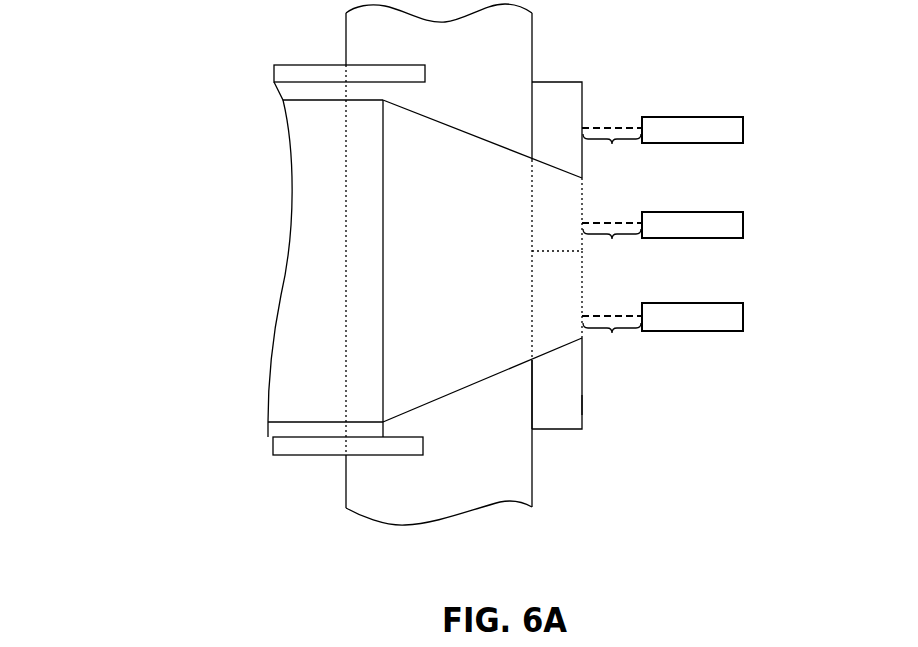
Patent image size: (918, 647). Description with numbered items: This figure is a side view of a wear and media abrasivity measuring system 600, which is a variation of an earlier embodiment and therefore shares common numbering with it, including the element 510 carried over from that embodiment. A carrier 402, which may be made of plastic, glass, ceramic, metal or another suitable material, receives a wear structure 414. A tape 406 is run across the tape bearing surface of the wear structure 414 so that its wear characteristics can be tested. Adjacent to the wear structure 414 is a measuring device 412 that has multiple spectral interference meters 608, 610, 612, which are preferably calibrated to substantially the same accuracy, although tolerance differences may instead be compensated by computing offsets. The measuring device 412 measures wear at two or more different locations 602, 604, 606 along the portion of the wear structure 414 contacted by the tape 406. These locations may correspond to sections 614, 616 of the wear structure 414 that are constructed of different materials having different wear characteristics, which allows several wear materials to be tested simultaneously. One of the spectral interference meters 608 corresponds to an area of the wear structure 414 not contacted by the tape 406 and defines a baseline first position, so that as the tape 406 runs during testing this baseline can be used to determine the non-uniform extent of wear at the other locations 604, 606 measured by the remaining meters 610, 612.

The system 600 is at (108, 118).
The carrier 402 is at (500, 505).
The tape 406 is at (398, 420).
The measuring device 412 is at (720, 362).
The wear structure 414 is at (588, 398).
The probe housing 510 is at (281, 293).
The location 602 is at (596, 118).
The location 604 is at (596, 213).
The location 606 is at (596, 308).
The spectral interference meter 608 is at (744, 128).
The spectral interference meter 610 is at (744, 225).
The spectral interference meter 612 is at (744, 318).
The section of the wear structure 614 is at (559, 82).
The section of the wear structure 616 is at (556, 430).